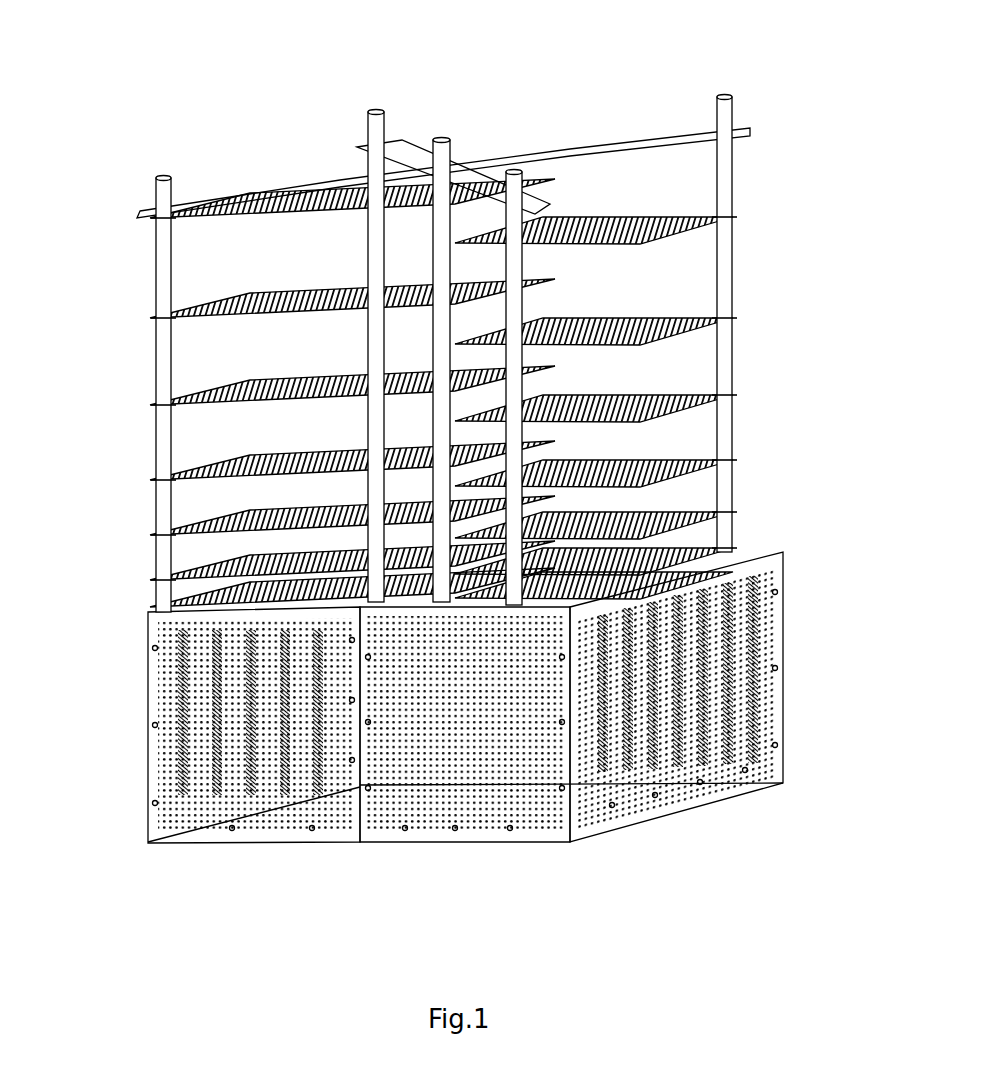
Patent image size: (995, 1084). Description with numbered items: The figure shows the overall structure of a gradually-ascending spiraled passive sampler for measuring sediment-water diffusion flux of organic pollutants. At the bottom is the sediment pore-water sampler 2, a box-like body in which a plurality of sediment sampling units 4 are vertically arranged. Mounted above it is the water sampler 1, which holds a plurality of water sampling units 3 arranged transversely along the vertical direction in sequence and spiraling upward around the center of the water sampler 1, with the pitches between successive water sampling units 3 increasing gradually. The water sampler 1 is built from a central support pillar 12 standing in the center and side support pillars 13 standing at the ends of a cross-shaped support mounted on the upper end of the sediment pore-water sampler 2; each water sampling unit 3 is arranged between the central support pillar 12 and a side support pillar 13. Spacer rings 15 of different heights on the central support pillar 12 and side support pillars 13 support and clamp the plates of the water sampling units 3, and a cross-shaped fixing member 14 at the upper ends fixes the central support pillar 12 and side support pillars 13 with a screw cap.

The water sampler 1 is at (135, 363).
The sediment pore-water sampler 2 is at (340, 868).
The water sampling unit 3 is at (645, 393).
The sediment sampling unit 4 is at (676, 772).
The central support pillar 12 is at (437, 232).
The side support pillar 13 is at (722, 284).
The fixing member 14 is at (460, 173).
The spacer ring 15 is at (722, 432).